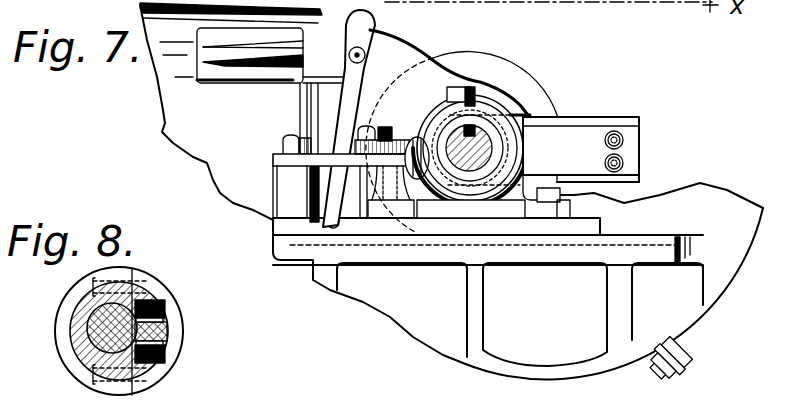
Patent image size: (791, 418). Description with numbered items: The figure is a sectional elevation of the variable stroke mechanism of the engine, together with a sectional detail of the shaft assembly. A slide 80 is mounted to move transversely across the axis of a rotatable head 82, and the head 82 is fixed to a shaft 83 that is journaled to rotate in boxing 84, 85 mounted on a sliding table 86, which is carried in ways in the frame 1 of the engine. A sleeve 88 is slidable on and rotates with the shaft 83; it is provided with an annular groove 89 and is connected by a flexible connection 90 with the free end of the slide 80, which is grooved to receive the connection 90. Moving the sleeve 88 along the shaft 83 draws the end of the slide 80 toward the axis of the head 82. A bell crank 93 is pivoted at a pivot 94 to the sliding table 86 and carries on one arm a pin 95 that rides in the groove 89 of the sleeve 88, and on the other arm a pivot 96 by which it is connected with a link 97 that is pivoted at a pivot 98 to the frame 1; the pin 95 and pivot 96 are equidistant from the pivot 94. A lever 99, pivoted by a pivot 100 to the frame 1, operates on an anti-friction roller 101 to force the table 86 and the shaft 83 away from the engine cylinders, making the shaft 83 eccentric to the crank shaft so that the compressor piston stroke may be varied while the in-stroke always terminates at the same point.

In FIG. 7, the frame 1 is at (451, 194).
In FIG. 7, the slide 80 is at (637, 127).
In FIG. 7, the rotatable head 82 is at (531, 92).
In FIG. 7, the shaft 83 is at (477, 183).
In FIG. 8, the shaft 83 is at (90, 316).
In FIG. 7, the boxing 84 is at (520, 123).
In FIG. 7, the boxing 85 is at (517, 8).
In FIG. 7, the sliding table 86 is at (623, 229).
In FIG. 7, the sleeve 88 is at (483, 114).
In FIG. 8, the sleeve 88 is at (63, 355).
In FIG. 7, the annular groove 89 is at (505, 104).
In FIG. 8, the annular groove 89 is at (72, 336).
In FIG. 7, the flexible connection 90 is at (581, 137).
In FIG. 8, the flexible connection 90 is at (157, 305).
In FIG. 7, the bell crank 93 is at (387, 140).
In FIG. 7, the pivot 94 is at (366, 125).
In FIG. 7, the pin 95 is at (460, 86).
In FIG. 7, the pivot 96 is at (413, 128).
In FIG. 7, the link 97 is at (330, 163).
In FIG. 7, the pivot 98 is at (283, 142).
In FIG. 7, the lever 99 is at (347, 95).
In FIG. 7, the pivot 100 is at (405, 45).
In FIG. 7, the anti-friction roller 101 is at (328, 228).